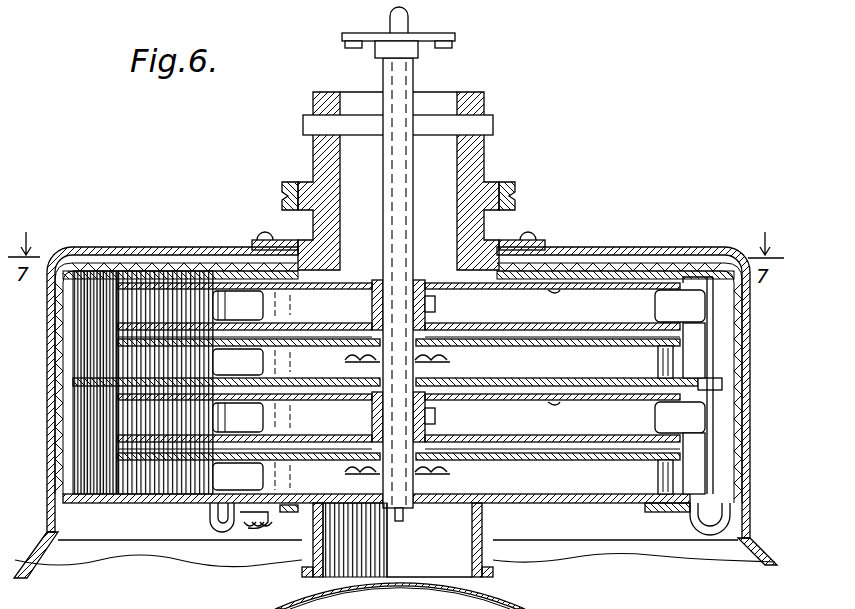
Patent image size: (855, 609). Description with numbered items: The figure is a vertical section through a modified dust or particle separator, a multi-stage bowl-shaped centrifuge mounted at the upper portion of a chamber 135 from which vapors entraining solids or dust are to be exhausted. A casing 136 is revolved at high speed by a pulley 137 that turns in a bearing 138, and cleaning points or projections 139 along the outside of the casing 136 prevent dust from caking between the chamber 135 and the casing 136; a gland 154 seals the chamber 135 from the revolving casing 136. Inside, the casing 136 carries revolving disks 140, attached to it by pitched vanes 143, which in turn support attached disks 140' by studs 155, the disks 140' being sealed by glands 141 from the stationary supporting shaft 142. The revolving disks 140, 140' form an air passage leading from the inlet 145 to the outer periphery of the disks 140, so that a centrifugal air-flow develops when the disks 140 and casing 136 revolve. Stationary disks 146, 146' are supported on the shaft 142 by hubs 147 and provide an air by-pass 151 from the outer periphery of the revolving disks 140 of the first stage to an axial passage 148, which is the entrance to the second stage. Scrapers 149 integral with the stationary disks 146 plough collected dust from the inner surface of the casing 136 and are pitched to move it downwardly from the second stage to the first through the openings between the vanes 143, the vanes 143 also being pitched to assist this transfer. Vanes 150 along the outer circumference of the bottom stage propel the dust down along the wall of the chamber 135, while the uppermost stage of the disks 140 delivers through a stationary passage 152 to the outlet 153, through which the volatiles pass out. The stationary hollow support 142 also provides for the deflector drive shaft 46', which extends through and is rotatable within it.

The shaft 46' is at (406, 273).
The chamber 135 is at (648, 552).
The casing 136 is at (744, 404).
The pulley 137 is at (515, 194).
The bearing 138 is at (484, 230).
The cleaning points or projections 139 is at (632, 247).
The revolving disks 140 is at (362, 382).
The attached disks 140' is at (391, 392).
The glands 141 is at (410, 362).
The stationary supporting shaft 142 is at (413, 191).
The vanes 143 is at (720, 376).
The inlet 145 is at (462, 542).
The stationary disks 146 is at (428, 388).
The stationary disks 146' is at (576, 356).
The hubs 147 is at (428, 306).
The axial passage 148 is at (472, 378).
The scrapers 149 is at (713, 309).
The vanes 150 is at (214, 522).
The air by-pass 151 is at (411, 421).
The stationary passage 152 is at (411, 310).
The outlet 153 is at (468, 153).
The gland 154 is at (293, 235).
The studs 155 is at (658, 366).